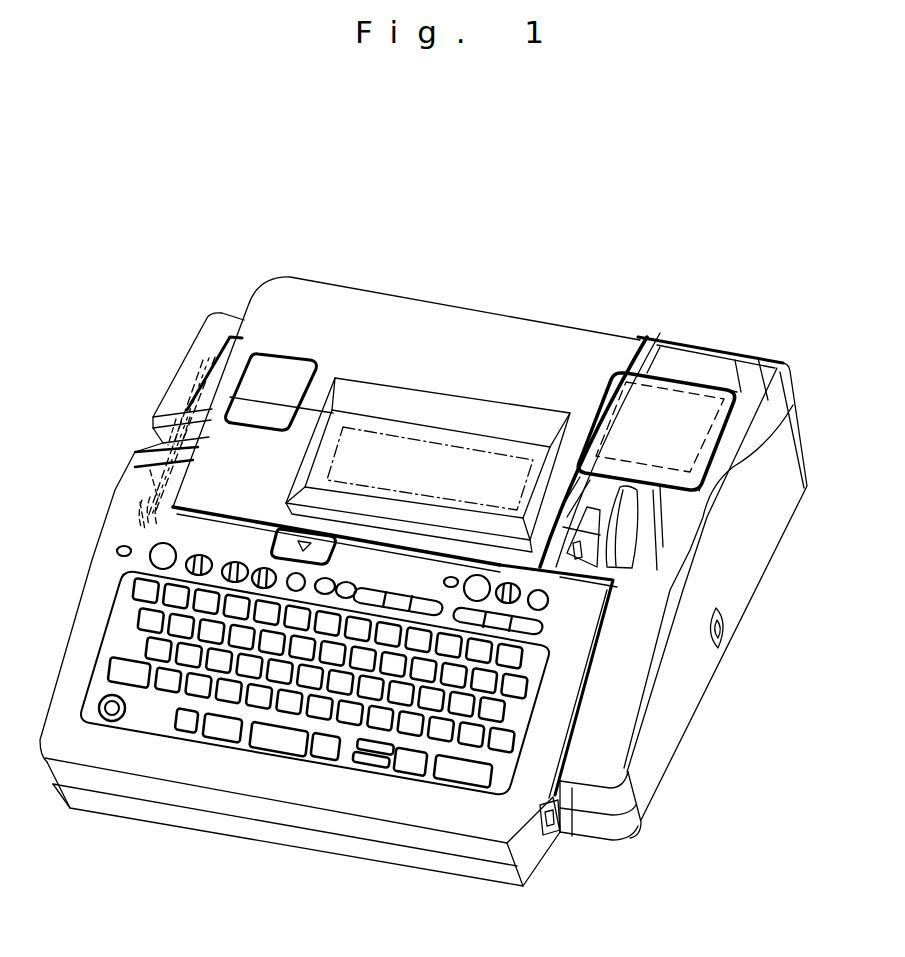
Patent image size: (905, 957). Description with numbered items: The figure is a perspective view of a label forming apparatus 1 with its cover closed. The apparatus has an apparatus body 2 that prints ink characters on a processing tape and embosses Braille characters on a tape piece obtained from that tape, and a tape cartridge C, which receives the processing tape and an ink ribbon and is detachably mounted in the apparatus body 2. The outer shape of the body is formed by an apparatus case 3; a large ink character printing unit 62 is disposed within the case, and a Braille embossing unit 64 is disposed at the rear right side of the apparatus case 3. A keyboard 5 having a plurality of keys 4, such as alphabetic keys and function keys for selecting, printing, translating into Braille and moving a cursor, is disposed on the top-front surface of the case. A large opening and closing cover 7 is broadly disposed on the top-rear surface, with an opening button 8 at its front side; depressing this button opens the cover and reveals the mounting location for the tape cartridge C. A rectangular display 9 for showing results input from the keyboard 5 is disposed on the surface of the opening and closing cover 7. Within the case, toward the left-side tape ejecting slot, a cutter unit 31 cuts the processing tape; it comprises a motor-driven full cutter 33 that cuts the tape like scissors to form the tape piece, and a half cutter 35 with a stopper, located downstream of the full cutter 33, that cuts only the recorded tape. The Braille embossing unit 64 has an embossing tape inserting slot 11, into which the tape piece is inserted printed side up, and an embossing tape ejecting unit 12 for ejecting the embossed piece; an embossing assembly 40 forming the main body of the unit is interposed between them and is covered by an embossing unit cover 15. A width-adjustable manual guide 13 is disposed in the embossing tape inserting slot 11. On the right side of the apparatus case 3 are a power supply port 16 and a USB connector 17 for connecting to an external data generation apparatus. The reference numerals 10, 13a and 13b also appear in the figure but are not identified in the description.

The label forming apparatus 1 is at (518, 150).
The apparatus body 2 is at (512, 292).
The apparatus case 3 is at (318, 852).
The keys 4 is at (167, 676).
The keyboard 5 is at (289, 722).
The opening and closing cover 7 is at (585, 338).
The opening button 8 is at (273, 538).
The display 9 is at (407, 433).
The window 10 is at (256, 432).
The embossing tape inserting slot 11 is at (618, 573).
The embossing tape ejecting unit 12 is at (684, 353).
The manual guide 13 is at (727, 525).
The platen roller 13a is at (627, 520).
The thermal head 13b is at (605, 540).
The embossing unit cover 15 is at (723, 384).
The power supply port 16 is at (727, 629).
The USB connector 17 is at (562, 828).
The cutter unit 31 is at (52, 470).
The full cutter 33 is at (142, 531).
The half cutter 35 is at (140, 483).
The embossing assembly 40 is at (705, 438).
The ink character printing unit 62 is at (211, 296).
The Braille embossing unit 64 is at (748, 335).
The tape cartridge C is at (268, 387).